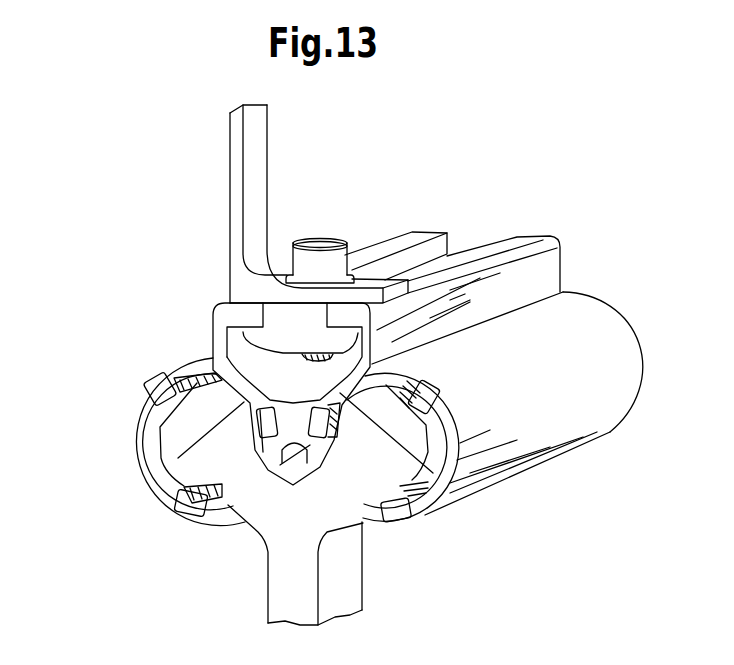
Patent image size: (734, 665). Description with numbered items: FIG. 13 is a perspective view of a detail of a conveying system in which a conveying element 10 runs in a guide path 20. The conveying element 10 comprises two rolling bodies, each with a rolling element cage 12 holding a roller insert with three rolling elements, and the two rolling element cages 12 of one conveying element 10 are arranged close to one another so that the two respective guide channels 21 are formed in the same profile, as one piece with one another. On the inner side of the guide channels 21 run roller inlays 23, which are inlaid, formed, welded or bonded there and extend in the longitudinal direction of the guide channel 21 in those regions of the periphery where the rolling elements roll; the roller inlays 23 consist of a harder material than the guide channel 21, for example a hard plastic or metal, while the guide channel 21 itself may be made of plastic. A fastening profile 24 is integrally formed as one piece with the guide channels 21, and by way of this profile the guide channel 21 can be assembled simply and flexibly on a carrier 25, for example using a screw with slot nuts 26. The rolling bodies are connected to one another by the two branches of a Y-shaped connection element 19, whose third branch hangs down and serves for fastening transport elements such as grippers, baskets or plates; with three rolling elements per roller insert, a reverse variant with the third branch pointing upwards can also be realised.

The conveying element 10 is at (374, 573).
The rolling element cage 12 is at (178, 458).
The connection element 19 is at (282, 553).
The guide path 20 is at (130, 397).
The guide channel 21 is at (137, 452).
The roller inlay 23 is at (162, 388).
The fastening profile 24 is at (238, 347).
The carrier 25 is at (237, 187).
The slot nut 26 is at (326, 257).